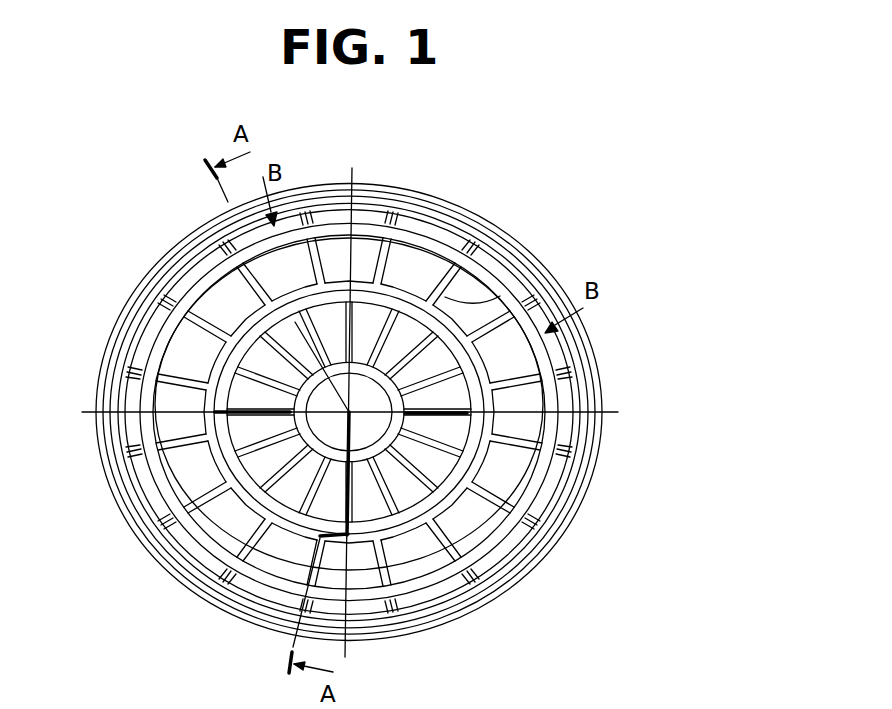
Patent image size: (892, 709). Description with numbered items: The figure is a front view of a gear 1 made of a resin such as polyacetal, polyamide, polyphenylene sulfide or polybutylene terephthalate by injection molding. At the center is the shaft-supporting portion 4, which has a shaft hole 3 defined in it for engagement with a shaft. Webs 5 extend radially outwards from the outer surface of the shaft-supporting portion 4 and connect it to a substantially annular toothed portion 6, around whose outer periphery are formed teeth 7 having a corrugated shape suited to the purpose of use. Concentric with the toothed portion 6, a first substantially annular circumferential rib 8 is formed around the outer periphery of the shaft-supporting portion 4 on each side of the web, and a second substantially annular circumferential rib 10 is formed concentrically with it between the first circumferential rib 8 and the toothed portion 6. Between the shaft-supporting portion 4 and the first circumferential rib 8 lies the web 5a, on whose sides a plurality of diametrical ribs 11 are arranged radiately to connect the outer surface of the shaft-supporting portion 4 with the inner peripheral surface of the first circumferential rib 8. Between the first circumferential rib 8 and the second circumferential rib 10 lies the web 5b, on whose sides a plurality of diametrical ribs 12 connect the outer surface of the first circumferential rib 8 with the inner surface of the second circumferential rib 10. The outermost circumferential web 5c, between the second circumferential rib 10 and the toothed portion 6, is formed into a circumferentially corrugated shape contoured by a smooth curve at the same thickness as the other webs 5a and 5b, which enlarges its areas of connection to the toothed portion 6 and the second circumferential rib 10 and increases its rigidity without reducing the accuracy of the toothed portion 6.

The gear 1 is at (135, 275).
The shaft hole 3 is at (236, 612).
The shaft-supporting portion 4 is at (173, 575).
The webs 5 is at (422, 469).
The web 5a is at (400, 490).
The web 5b is at (463, 533).
The outermost circumferential web 5c is at (547, 563).
The toothed portion 6 is at (597, 376).
The teeth 7 is at (593, 332).
The first circumferential rib 8 is at (580, 607).
The second circumferential rib 10 is at (600, 438).
The diametrical ribs 11 is at (383, 293).
The diametrical ribs 12 is at (487, 307).